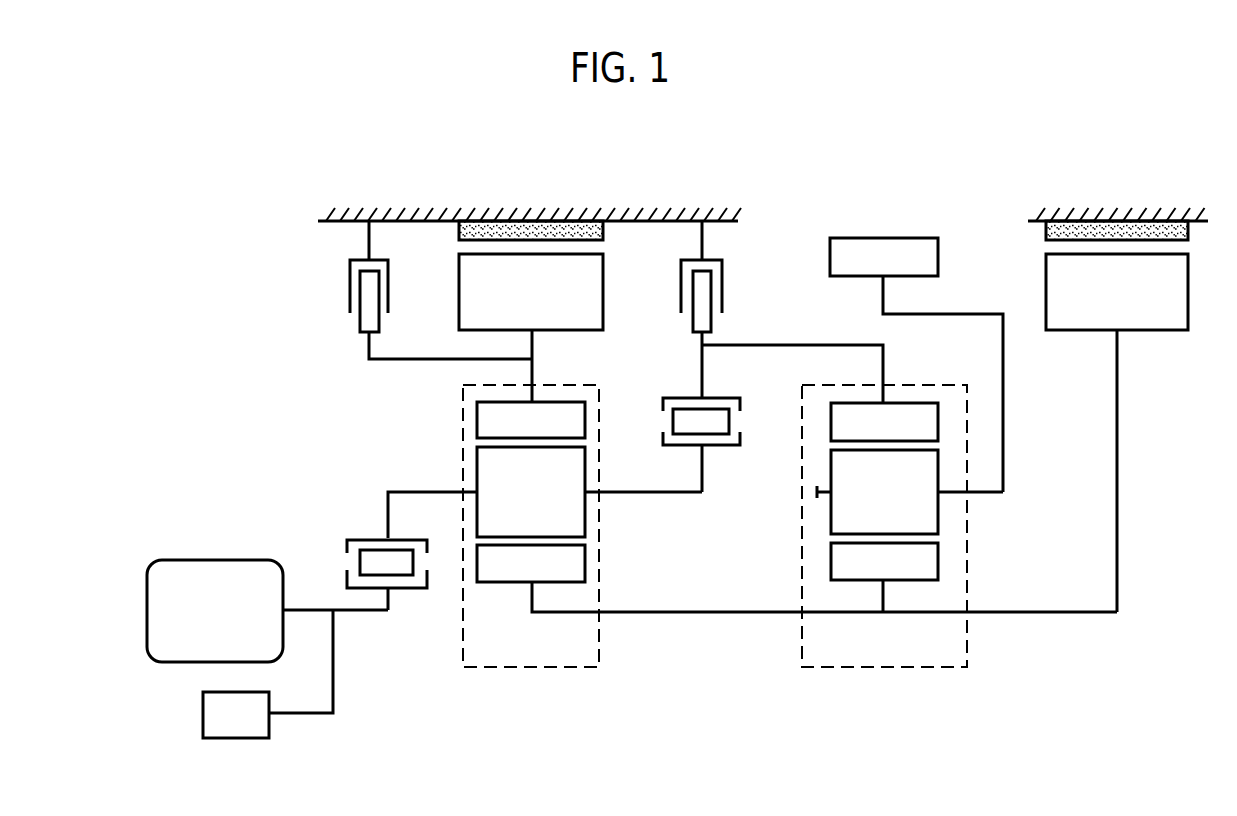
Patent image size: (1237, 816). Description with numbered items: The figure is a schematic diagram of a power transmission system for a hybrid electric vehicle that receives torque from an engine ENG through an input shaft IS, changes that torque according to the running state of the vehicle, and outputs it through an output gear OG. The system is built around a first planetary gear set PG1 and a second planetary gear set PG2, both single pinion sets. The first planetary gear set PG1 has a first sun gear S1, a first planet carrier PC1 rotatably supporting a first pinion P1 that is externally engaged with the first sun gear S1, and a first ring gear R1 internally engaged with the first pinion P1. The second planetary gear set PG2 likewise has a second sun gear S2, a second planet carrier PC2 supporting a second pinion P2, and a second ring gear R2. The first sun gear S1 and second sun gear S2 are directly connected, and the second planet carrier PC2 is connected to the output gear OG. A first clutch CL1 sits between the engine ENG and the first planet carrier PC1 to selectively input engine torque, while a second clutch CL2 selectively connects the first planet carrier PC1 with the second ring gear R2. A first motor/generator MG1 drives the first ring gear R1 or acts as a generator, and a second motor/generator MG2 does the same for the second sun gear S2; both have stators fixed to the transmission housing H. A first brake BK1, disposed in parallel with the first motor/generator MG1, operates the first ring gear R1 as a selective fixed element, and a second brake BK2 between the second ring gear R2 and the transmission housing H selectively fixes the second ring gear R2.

The transmission housing H is at (499, 216).
The first motor/generator MG1 is at (531, 311).
The second motor/generator MG2 is at (1117, 416).
The first brake BK1 is at (417, 290).
The second brake BK2 is at (782, 312).
The output gear OG is at (916, 365).
The first planetary gear set PG1 is at (790, 579).
The second planetary gear set PG2 is at (884, 579).
The first ring gear R1 is at (531, 420).
The first pinion P1 is at (531, 492).
The first sun gear S1 is at (797, 578).
The second ring gear R2 is at (884, 422).
The second pinion P2 is at (877, 492).
The second sun gear S2 is at (884, 577).
The input shaft IS is at (387, 517).
The first clutch CL1 is at (366, 568).
The second clutch CL2 is at (709, 445).
The first planet carrier PC1 is at (640, 495).
The second planet carrier PC2 is at (985, 494).
The engine ENG is at (267, 611).